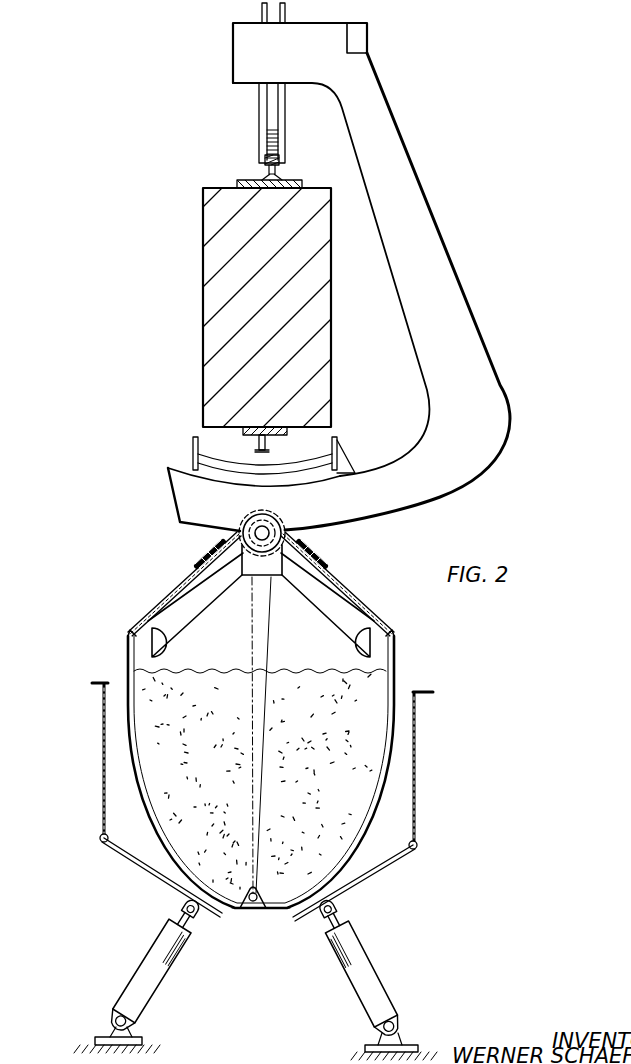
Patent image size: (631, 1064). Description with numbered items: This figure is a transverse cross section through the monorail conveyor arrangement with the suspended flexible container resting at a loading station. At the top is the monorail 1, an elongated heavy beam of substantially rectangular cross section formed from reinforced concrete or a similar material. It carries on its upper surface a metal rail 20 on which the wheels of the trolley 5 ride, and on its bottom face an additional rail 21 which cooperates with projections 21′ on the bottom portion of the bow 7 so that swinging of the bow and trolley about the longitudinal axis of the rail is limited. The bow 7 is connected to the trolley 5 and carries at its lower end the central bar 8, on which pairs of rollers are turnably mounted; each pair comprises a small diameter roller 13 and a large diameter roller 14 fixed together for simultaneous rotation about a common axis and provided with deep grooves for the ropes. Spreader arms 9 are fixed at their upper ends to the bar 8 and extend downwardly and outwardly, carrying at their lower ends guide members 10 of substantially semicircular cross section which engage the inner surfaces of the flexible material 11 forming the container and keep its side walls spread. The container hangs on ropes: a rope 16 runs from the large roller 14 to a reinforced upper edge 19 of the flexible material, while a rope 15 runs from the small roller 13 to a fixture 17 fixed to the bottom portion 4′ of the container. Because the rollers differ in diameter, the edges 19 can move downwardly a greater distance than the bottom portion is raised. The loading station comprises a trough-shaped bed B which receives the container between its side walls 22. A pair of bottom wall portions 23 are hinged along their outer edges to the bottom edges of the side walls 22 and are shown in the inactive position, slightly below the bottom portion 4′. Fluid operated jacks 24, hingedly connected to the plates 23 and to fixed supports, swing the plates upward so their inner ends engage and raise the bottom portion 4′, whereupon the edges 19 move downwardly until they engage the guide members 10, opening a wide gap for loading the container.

The monorail 1 is at (215, 256).
The trolley 5 is at (268, 97).
The bow 7 is at (420, 207).
The central bar 8 is at (280, 568).
The spreader arm 9 is at (188, 617).
The guide member 10 is at (128, 637).
The flexible material 11 is at (128, 663).
The small diameter roller 13 is at (250, 518).
The large diameter roller 14 is at (288, 528).
The rope 15 is at (256, 734).
The rope 16 is at (187, 575).
The fixture 17 is at (264, 901).
The upper edge 19 is at (222, 538).
The metal rail 20 is at (289, 178).
The additional rail 21 is at (272, 448).
The projection 21′ is at (190, 455).
The side wall 22 is at (103, 765).
The bottom wall portion 23 is at (125, 853).
The fluid operated jack 24 is at (140, 975).
The bottom portion 4′ is at (246, 922).
The trough-shaped bed B is at (421, 812).